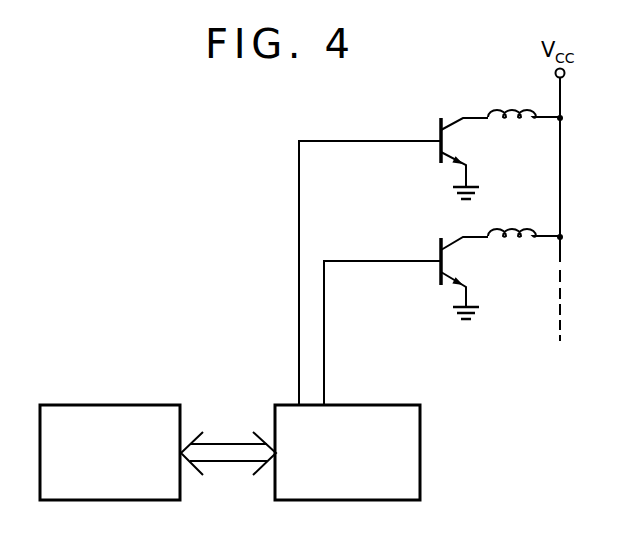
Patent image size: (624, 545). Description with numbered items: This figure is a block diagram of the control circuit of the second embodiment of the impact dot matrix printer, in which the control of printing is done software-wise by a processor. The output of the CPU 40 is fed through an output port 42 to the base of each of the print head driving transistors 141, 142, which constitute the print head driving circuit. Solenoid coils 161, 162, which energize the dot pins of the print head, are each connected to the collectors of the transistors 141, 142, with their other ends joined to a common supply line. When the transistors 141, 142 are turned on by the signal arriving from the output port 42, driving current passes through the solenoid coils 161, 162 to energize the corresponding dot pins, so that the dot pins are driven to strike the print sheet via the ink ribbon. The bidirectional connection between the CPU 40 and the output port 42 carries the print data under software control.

The CPU 40 is at (115, 403).
The output port 42 is at (386, 403).
The transistor 141 is at (460, 142).
The transistor 142 is at (460, 261).
The solenoid coil 161 is at (515, 108).
The solenoid coil 162 is at (515, 227).